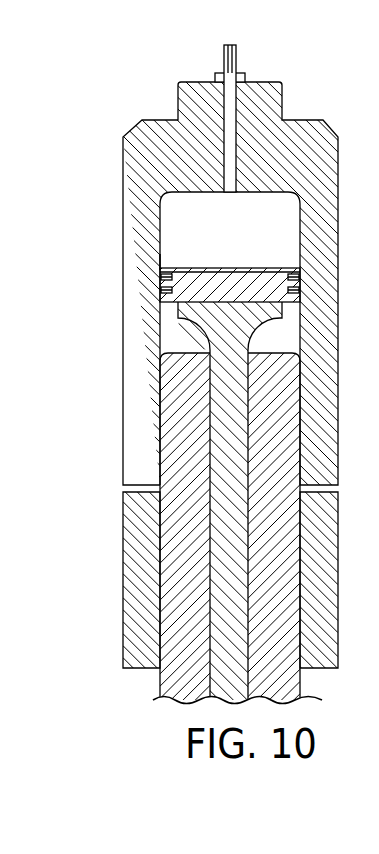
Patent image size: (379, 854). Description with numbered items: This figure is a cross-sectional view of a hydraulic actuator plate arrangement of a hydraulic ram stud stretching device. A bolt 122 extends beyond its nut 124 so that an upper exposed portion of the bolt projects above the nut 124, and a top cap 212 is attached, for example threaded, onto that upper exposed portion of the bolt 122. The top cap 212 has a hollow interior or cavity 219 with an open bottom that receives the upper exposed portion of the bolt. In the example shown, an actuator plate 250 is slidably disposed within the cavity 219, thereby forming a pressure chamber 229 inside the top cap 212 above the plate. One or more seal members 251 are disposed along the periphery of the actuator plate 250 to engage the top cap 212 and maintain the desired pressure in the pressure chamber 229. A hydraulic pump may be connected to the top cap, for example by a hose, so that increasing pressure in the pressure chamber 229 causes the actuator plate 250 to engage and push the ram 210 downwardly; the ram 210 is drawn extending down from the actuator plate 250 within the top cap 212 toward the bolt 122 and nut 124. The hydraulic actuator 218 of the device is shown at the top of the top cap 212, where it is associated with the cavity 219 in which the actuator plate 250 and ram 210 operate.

The hydraulic actuator 218 is at (230, 102).
The top cap 212 is at (132, 162).
The pressure chamber 229 is at (182, 212).
The cavity 219 is at (160, 262).
The seal member 251 is at (160, 289).
The actuator plate 250 is at (232, 285).
The ram 210 is at (227, 328).
The bolt 122 is at (173, 468).
The nut 124 is at (133, 596).